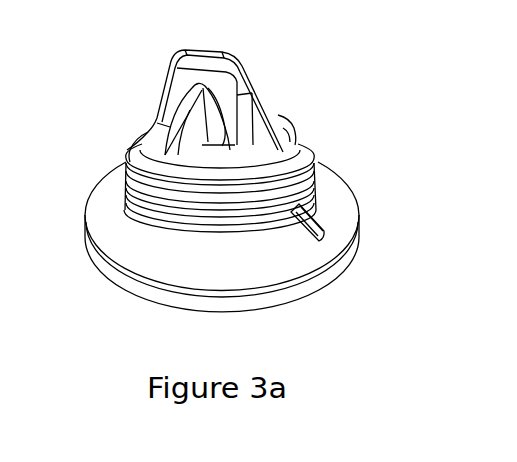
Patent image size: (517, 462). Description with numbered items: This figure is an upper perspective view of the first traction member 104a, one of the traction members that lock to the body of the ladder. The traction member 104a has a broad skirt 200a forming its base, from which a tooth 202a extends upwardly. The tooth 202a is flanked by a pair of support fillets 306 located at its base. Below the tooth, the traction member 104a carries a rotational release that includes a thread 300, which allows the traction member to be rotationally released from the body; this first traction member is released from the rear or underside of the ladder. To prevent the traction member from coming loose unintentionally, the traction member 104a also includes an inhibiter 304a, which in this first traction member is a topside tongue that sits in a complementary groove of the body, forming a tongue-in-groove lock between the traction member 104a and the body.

The first traction member 104a is at (120, 65).
The tooth 202a is at (218, 62).
The support fillets 306 is at (168, 153).
The thread 300 is at (305, 153).
The inhibiter 304a is at (318, 212).
The broad skirt 200a is at (133, 255).